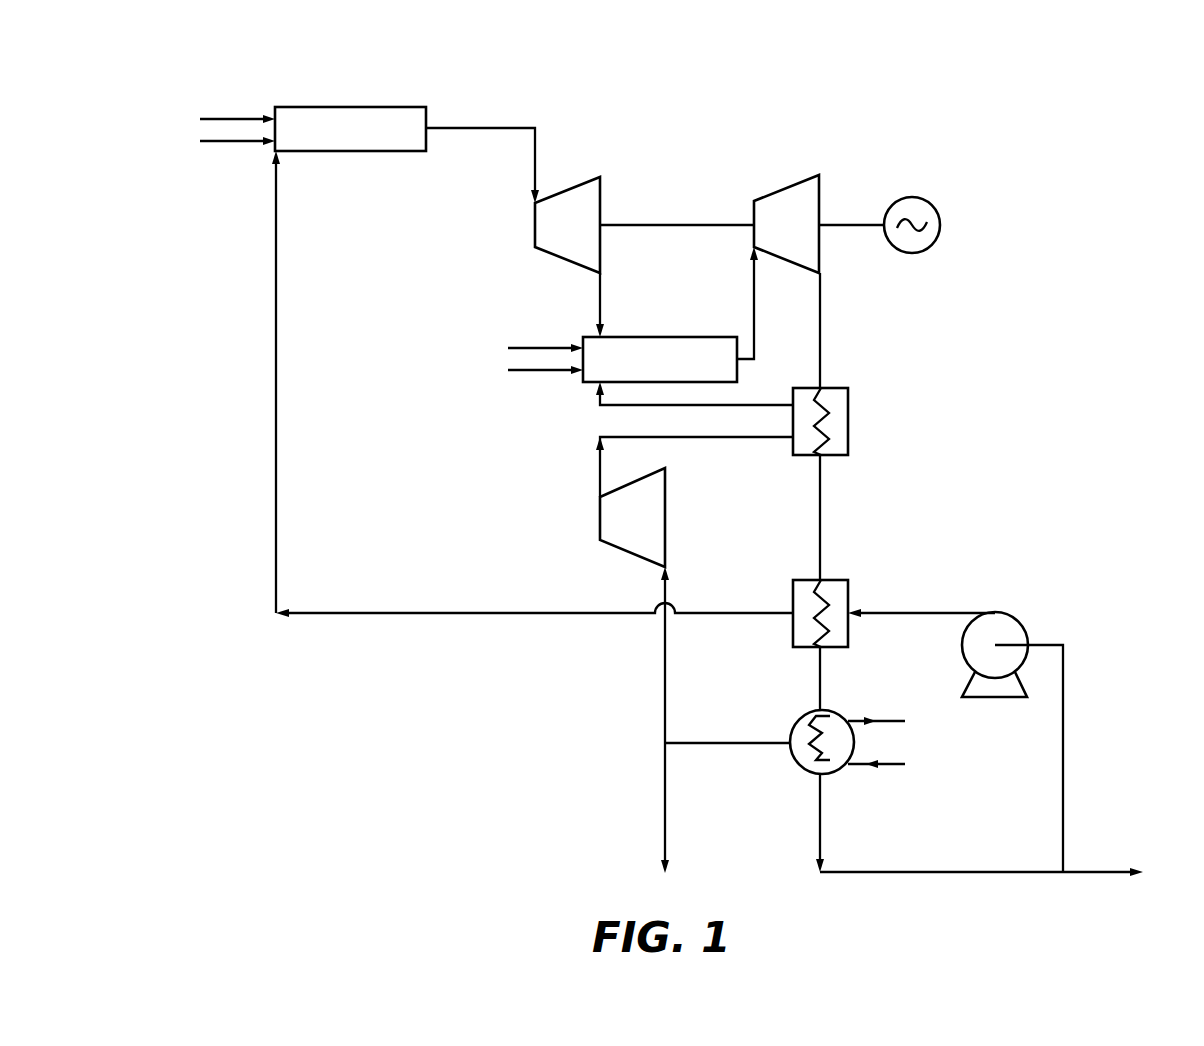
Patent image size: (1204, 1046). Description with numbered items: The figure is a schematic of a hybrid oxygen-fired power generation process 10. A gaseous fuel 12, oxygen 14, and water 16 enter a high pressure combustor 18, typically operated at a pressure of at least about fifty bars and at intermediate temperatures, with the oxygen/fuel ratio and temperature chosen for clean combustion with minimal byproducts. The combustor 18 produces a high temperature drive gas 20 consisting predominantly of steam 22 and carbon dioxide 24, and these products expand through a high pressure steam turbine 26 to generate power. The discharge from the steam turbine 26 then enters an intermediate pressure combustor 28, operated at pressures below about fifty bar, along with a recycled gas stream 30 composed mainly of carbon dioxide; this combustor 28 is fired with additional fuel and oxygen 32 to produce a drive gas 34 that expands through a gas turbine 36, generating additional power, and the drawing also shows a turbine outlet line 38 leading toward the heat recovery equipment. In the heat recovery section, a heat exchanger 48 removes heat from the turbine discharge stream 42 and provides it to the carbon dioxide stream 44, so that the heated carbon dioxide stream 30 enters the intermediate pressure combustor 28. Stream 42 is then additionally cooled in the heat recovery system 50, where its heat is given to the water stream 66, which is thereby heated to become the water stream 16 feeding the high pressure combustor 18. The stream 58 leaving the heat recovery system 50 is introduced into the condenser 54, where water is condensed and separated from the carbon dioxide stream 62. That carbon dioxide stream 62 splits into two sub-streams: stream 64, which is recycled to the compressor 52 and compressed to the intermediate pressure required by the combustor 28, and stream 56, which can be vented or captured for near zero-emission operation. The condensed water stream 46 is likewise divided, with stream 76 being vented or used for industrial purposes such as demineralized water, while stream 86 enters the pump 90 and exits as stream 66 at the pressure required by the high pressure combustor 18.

The hybrid oxygen-fired power generation process 10 is at (952, 96).
The gaseous fuel 12 is at (220, 113).
The oxygen 14 is at (220, 145).
The water 16 is at (277, 347).
The high pressure combustor 18 is at (388, 153).
The high temperature drive gas 20 is at (500, 113).
The steam 22 is at (522, 128).
The CO2 24 is at (500, 128).
The high pressure steam turbine 26 is at (585, 183).
The intermediate pressure combustor 28 is at (605, 293).
The recycled gas stream 30 is at (615, 407).
The additional fuel and oxygen 32 is at (542, 347).
The drive gas 34 is at (754, 300).
The gas turbine 36 is at (797, 182).
The turbine exhaust line 38 is at (822, 330).
The stream 42 is at (822, 512).
The CO2 stream 44 is at (695, 437).
The water stream 46 is at (887, 872).
The heat exchanger 48 is at (845, 388).
The heat recovery system 50 is at (837, 580).
The compressor 52 is at (612, 547).
The condenser 54 is at (807, 712).
The stream 56 is at (668, 813).
The stream 58 is at (823, 683).
The CO2 stream 62 is at (717, 743).
The stream 64 is at (663, 673).
The water stream 66 is at (957, 613).
The stream 76 is at (1098, 873).
The stream 86 is at (1063, 743).
The pump 90 is at (1023, 630).